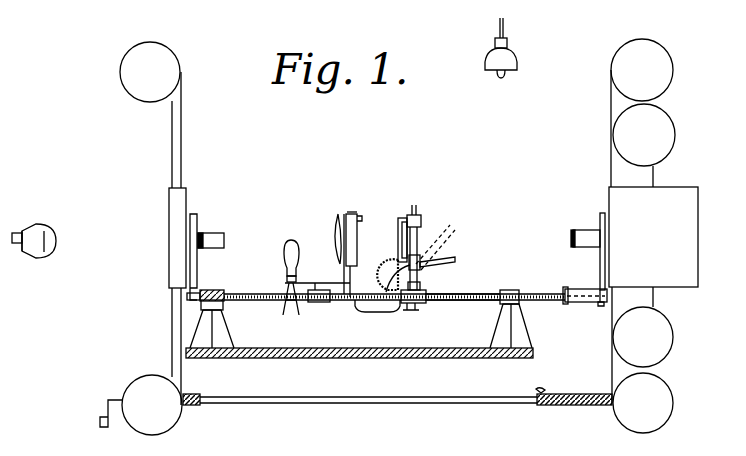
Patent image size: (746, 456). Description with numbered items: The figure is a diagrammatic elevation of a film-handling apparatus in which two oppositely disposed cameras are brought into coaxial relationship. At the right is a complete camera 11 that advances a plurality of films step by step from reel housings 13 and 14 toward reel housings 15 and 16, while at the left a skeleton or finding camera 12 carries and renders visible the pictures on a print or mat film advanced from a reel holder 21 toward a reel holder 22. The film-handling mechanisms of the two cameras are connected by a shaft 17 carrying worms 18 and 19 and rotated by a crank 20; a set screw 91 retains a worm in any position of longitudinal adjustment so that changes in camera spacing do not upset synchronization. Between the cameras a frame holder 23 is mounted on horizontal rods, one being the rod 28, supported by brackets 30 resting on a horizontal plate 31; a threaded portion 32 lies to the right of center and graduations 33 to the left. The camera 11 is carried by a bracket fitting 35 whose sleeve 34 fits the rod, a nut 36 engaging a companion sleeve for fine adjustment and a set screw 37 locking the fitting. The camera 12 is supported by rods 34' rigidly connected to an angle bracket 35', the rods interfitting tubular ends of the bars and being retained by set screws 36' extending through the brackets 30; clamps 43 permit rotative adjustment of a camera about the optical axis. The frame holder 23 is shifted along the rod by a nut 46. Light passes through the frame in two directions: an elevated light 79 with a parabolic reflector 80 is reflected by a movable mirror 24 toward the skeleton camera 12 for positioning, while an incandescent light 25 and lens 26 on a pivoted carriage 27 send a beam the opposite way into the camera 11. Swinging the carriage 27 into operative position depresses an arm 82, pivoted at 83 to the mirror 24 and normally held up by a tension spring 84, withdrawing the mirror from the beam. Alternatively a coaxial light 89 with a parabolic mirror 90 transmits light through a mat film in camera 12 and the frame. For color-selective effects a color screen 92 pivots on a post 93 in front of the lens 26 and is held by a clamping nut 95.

The camera 11 is at (688, 241).
The skeleton camera 12 is at (176, 240).
The reel housing 13 is at (644, 45).
The reel housing 14 is at (664, 125).
The reel housing 15 is at (663, 406).
The reel housing 16 is at (665, 340).
The shaft 17 is at (395, 397).
The worm 18 is at (200, 398).
The worm 19 is at (590, 395).
The crank 20 is at (106, 428).
The reel holder 21 is at (163, 57).
The reel holder 22 is at (152, 392).
The frame holder 23 is at (426, 205).
The movable mirror 24 is at (448, 258).
The light 25 is at (288, 248).
The lens 26 is at (336, 236).
The carriage 27 is at (315, 283).
The rod 28 is at (483, 294).
The bracket 30 is at (225, 340).
The horizontal plate 31 is at (457, 350).
The threaded shaft 32 is at (557, 294).
The graduations 33 is at (331, 302).
The sleeve 34 is at (583, 281).
The rods 34' is at (174, 309).
The bracket fitting 35 is at (573, 274).
The angle bracket 35' is at (214, 257).
The nut 36 is at (574, 308).
The set screw 36' is at (226, 287).
The set screw 37 is at (602, 306).
The clamp 43 is at (198, 235).
The nut 46 is at (421, 304).
The light 79 is at (510, 72).
The parabolic reflector 80 is at (512, 62).
The arm 82 is at (370, 312).
The pivot 83 is at (421, 270).
The tension spring 84 is at (390, 283).
The light 89 is at (50, 243).
The parabolic mirror 90 is at (33, 237).
The set screw 91 is at (540, 391).
The color screen 92 is at (357, 255).
The post 93 is at (352, 212).
The clamping nut 95 is at (362, 219).